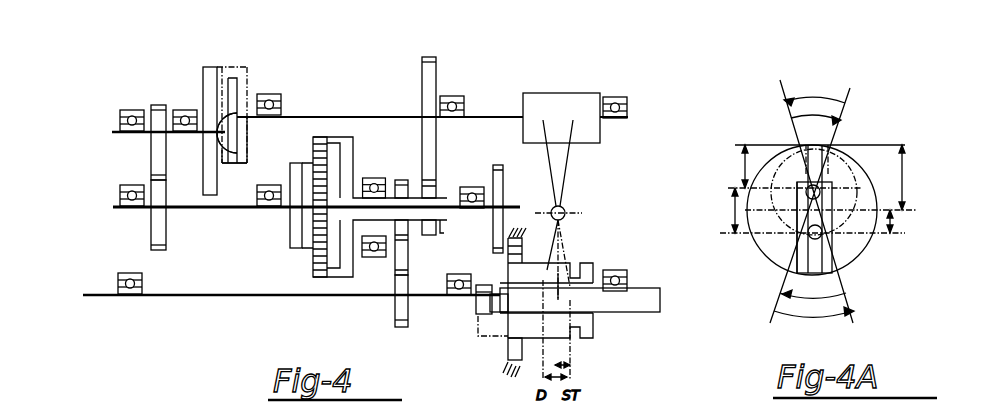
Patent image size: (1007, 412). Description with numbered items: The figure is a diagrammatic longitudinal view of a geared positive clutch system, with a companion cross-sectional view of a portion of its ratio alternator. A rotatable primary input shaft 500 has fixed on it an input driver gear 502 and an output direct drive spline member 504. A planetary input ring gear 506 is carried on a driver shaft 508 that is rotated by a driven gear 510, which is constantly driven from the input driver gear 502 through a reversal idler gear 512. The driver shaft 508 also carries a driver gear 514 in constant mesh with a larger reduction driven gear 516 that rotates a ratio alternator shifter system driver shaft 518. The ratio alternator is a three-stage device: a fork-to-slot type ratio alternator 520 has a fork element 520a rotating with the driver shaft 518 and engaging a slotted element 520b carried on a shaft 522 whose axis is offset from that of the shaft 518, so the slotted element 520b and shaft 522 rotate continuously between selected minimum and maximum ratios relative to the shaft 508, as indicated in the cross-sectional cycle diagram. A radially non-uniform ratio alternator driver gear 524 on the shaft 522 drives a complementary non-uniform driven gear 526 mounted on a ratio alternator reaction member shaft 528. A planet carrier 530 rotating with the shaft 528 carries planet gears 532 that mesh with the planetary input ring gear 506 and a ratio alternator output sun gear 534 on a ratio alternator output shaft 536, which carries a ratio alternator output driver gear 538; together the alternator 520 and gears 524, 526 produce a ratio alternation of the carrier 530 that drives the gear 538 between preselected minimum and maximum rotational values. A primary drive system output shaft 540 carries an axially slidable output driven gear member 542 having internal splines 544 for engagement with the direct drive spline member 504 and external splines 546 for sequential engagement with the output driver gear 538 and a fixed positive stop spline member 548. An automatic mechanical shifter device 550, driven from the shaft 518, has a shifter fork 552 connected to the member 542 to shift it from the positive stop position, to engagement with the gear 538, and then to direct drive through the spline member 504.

In FIG. 4, the primary input shaft 500 is at (108, 270).
In FIG. 4, the input driver gear 502 is at (392, 313).
In FIG. 4, the output direct drive spline member 504 is at (476, 306).
In FIG. 4, the planetary input ring gear 506 is at (325, 137).
In FIG. 4, the driver shaft 508 is at (394, 159).
In FIG. 4, the driven gear 510 is at (402, 180).
In FIG. 4, the reversal idler gear 512 is at (392, 270).
In FIG. 4, the driver gear 514 is at (438, 195).
In FIG. 4, the reduction driven gear 516 is at (422, 70).
In FIG. 4, the ratio alternator shifter system driver shaft 518 is at (390, 98).
In FIG. 4A, the ratio alternator shifter system driver shaft 518 is at (816, 190).
In FIG. 4, the fork-to-slot type ratio alternator 520 is at (220, 63).
In FIG. 4A, the fork-to-slot type ratio alternator 520 is at (840, 276).
In FIG. 4, the fork element 520a is at (250, 140).
In FIG. 4A, the fork element 520a is at (832, 232).
In FIG. 4, the slotted element 520b is at (229, 197).
In FIG. 4A, the slotted element 520b is at (800, 262).
In FIG. 4, the shaft 522 is at (125, 132).
In FIG. 4A, the shaft 522 is at (815, 208).
In FIG. 4, the radially non-uniform ratio alternator driver gear 524 is at (154, 165).
In FIG. 4, the radially non-uniform ratio alternator driven gear 526 is at (152, 232).
In FIG. 4, the ratio alternator reaction member shaft 528 is at (232, 215).
In FIG. 4, the ratio alternator planet carrier 530 is at (291, 222).
In FIG. 4, the planet gears 532 is at (313, 258).
In FIG. 4, the ratio alternator output sun gear 534 is at (313, 232).
In FIG. 4, the ratio alternator output shaft 536 is at (448, 226).
In FIG. 4, the ratio alternator output driver gear 538 is at (503, 181).
In FIG. 4, the primary drive system output shaft 540 is at (640, 313).
In FIG. 4, the output driven gear member 542 is at (580, 340).
In FIG. 4, the internal splines 544 is at (500, 322).
In FIG. 4, the external splines 546 is at (507, 355).
In FIG. 4, the fixed positive stop spline member 548 is at (512, 370).
In FIG. 4, the automatic mechanical shifter (A.M.S.) device 550 is at (566, 93).
In FIG. 4, the shifter fork 552 is at (566, 236).